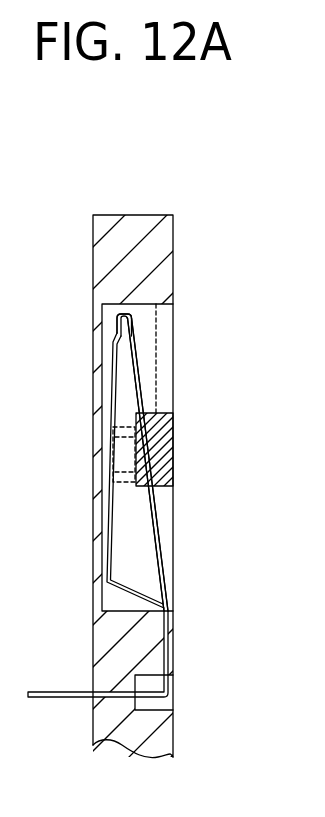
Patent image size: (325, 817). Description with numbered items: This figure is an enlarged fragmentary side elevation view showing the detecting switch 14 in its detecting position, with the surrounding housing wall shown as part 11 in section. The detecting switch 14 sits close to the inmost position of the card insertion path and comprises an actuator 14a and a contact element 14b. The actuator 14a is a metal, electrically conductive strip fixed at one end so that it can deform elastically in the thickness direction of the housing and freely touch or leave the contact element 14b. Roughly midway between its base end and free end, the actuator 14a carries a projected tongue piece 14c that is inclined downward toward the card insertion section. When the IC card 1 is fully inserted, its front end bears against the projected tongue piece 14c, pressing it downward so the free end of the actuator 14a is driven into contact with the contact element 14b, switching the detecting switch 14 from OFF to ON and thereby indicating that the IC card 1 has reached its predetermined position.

The IC card 1 is at (173, 446).
The housing 11 is at (110, 259).
The detecting switch 14 is at (117, 392).
The actuator 14a is at (133, 325).
The contact element 14b is at (117, 327).
The projected tongue piece 14c is at (120, 450).